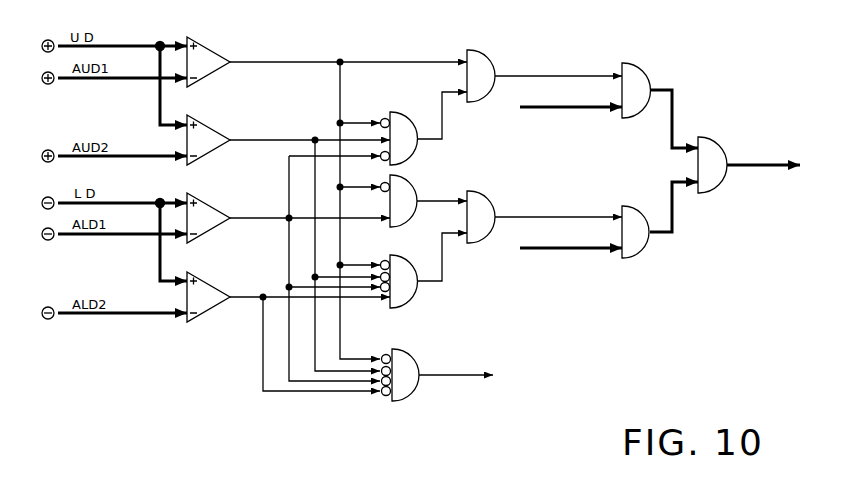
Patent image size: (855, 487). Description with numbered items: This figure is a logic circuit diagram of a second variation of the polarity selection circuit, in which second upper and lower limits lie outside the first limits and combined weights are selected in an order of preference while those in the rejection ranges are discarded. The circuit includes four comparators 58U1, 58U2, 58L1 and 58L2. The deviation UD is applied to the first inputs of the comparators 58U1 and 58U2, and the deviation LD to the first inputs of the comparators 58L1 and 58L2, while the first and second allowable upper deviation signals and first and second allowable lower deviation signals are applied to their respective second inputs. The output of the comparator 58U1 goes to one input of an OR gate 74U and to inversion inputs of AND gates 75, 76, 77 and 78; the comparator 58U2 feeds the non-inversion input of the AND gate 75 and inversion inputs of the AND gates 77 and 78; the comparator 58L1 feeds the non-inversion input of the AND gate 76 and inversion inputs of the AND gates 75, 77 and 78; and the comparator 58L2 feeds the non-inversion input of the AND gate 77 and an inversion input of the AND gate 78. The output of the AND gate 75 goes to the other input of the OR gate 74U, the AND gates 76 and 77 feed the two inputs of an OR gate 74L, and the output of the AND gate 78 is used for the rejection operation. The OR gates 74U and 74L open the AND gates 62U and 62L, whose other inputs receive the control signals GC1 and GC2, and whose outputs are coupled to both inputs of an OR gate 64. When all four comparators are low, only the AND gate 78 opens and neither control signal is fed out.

The comparator 58U1 is at (210, 47).
The comparator 58U2 is at (210, 126).
The comparator 58L1 is at (210, 204).
The comparator 58L2 is at (210, 282).
The AND gate 75 is at (400, 112).
The AND gate 76 is at (420, 186).
The AND gate 77 is at (415, 294).
The AND gate 78 is at (410, 399).
The OR gate 74U is at (488, 56).
The OR gate 74L is at (495, 199).
The AND gate 62U is at (648, 69).
The AND gate 62L is at (648, 251).
The OR gate 64 is at (720, 137).